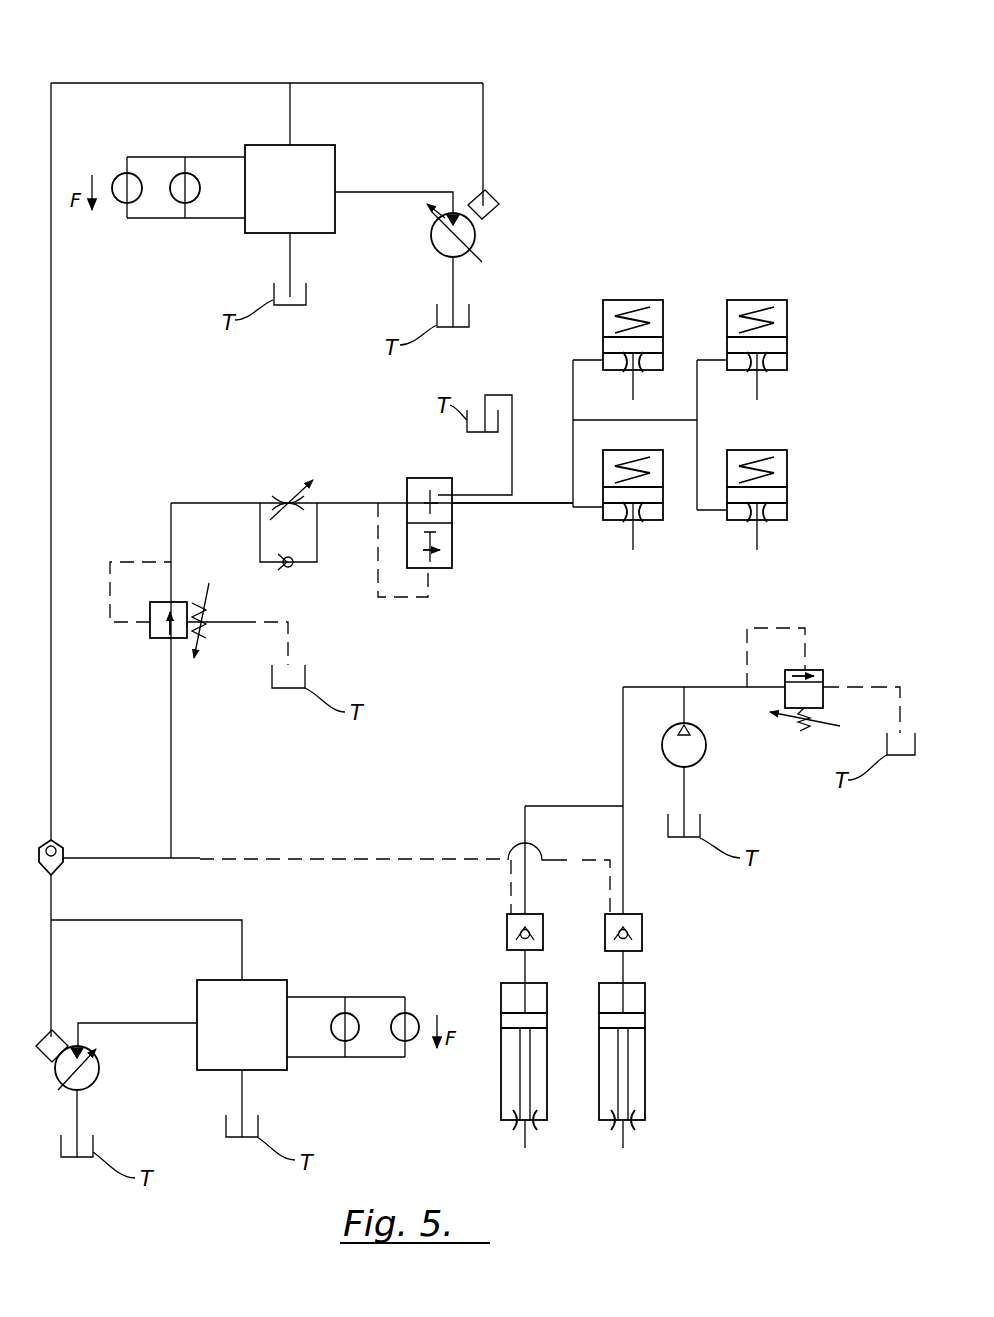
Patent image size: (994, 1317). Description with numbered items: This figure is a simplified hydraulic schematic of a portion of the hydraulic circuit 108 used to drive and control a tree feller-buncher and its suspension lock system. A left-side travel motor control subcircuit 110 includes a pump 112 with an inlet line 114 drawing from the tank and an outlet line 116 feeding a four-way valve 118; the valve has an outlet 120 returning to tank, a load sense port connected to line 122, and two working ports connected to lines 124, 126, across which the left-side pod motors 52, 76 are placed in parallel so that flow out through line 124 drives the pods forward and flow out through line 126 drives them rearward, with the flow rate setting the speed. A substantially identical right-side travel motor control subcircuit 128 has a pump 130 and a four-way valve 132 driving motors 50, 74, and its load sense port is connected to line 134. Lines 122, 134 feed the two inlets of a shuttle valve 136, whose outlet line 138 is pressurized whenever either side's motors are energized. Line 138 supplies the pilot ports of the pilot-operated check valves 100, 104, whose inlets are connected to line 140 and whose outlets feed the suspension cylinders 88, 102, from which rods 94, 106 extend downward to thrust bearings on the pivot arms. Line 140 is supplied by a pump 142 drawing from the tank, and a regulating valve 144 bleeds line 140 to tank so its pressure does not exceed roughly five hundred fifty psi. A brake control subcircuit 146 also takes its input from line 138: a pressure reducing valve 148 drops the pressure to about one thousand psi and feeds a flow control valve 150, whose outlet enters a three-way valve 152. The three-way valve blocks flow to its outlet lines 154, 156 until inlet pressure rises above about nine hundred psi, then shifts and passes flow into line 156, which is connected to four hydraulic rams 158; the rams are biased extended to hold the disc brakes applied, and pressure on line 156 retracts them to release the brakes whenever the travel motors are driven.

The hydraulic motor 50 is at (360, 1040).
The hydraulic motor 52 is at (168, 202).
The hydraulic motor 74 is at (385, 1013).
The hydraulic motor 76 is at (118, 176).
The hydraulic cylinder 88 is at (515, 1000).
The rod 94 is at (520, 1135).
The pilot-operated check valve 100 is at (507, 930).
The cylinder 102 is at (633, 1000).
The pilot-operated check valve 104 is at (645, 935).
The rod 106 is at (625, 1135).
The hydraulic circuit 108 is at (357, 70).
The left-side travel motor control subcircuit 110 is at (190, 66).
The pump 112 is at (440, 250).
The inlet line 114 is at (455, 278).
The outlet line 116 is at (395, 192).
The four-way valve 118 is at (335, 145).
The outlet 120 is at (288, 250).
The line 122 is at (390, 83).
The line 124 is at (215, 157).
The line 126 is at (215, 218).
The right-side travel motor control subcircuit 128 is at (200, 1166).
The pump 130 is at (93, 1085).
The four-way valve 132 is at (287, 1070).
The line 134 is at (52, 958).
The shuttle valve 136 is at (62, 870).
The line 138 is at (98, 858).
The line 140 is at (623, 730).
The pump 142 is at (705, 765).
The regulating valve 144 is at (823, 670).
The brake control subcircuit 146 is at (260, 464).
The pressure reducing valve 148 is at (150, 640).
The flow control valve 150 is at (310, 503).
The three-way valve 152 is at (452, 568).
The line 154 is at (505, 395).
The line 156 is at (510, 505).
The hydraulic rams 158 is at (700, 268).